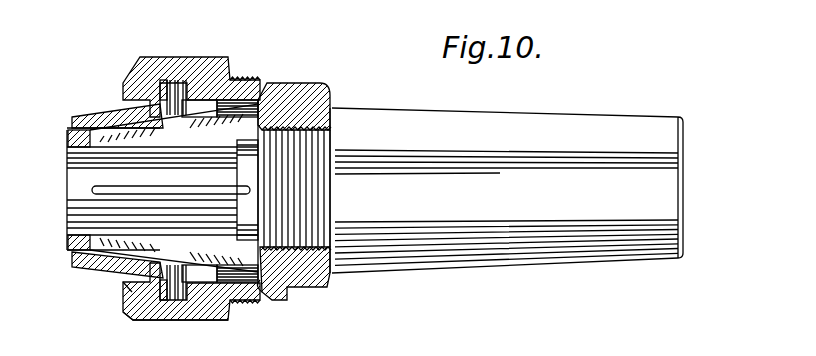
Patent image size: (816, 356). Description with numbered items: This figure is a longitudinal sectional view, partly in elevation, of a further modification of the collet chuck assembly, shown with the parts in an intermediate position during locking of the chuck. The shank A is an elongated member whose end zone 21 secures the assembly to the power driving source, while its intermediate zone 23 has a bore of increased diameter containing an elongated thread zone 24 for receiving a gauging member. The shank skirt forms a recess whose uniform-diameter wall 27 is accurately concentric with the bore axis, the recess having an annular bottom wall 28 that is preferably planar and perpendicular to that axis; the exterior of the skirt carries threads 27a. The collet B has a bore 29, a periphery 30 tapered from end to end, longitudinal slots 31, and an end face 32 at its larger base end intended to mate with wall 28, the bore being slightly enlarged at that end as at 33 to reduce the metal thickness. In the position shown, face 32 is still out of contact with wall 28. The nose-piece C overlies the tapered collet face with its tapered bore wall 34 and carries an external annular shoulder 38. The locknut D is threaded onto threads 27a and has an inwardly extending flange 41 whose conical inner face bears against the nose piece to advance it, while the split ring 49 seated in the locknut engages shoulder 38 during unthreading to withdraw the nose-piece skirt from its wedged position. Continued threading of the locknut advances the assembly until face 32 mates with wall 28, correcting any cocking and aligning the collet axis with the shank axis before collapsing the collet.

The shank member A is at (571, 116).
The collet B is at (67, 181).
The nose-piece C is at (112, 106).
The locking ring or nut D is at (196, 60).
The end zone of the shank bore 21 is at (656, 117).
The intermediate zone of the shank 23 is at (420, 108).
The elongated thread zone 24 is at (330, 270).
The wall of the shank skirt recess 27 is at (236, 302).
The external threads of the shank skirt 27a is at (250, 80).
The annular bottom wall of the shank recess 28 is at (264, 284).
The collet bore 29 is at (92, 190).
The tapered periphery of the collet 30 is at (206, 318).
The longitudinal slots of the collet 31 is at (168, 194).
The end face of the collet base end 32 is at (302, 98).
The enlarged bore zone of the collet 33 is at (246, 171).
The tapered bore wall of the nose piece 34 is at (112, 264).
The external annular shoulder of the nose piece 38 is at (140, 320).
The inwardly extending flange of the locknut 41 is at (126, 292).
The split ring 49 is at (164, 302).